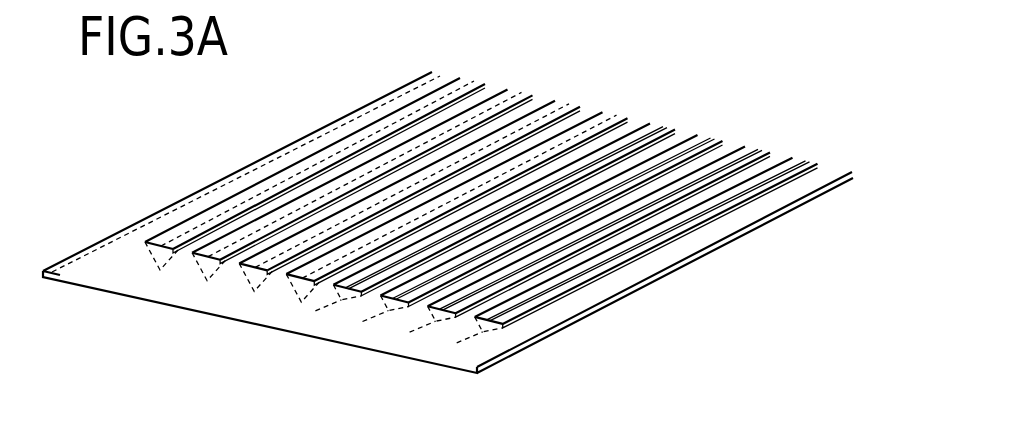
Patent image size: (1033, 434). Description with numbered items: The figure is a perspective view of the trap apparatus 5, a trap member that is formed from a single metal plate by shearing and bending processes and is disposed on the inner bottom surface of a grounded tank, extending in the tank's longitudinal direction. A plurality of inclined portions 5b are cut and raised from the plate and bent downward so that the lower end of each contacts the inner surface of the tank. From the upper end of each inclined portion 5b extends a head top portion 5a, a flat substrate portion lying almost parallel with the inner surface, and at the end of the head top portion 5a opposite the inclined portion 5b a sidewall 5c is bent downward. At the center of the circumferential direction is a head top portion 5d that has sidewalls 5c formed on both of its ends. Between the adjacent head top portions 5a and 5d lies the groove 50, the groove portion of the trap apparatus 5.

The trap apparatus 5 is at (375, 328).
The head top portion 5a is at (386, 155).
The inclined portion 5b is at (156, 262).
The sidewall 5c is at (300, 300).
The head top portion 5d is at (635, 128).
The groove 50 is at (176, 224).